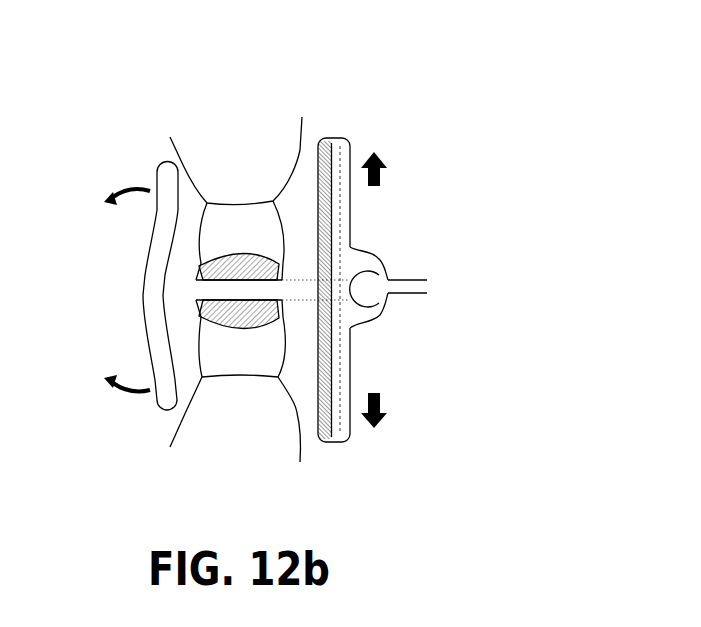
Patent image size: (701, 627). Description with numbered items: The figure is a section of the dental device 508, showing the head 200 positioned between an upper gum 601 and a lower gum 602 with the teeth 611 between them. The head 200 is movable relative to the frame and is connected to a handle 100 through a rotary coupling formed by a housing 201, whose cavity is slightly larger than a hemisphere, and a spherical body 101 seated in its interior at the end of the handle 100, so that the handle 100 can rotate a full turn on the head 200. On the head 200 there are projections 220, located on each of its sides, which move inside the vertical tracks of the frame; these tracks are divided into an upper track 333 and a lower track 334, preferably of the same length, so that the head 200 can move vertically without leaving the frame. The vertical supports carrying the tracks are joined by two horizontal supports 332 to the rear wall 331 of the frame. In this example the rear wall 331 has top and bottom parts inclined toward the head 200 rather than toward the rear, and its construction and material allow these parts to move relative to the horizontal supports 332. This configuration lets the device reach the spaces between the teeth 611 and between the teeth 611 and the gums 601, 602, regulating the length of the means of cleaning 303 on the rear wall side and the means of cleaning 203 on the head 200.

The dental device 508 is at (489, 106).
The means of cleaning 303 is at (163, 170).
The rear wall 331 is at (148, 257).
The horizontal supports 332 is at (165, 305).
The gum 601 is at (270, 137).
The gum 602 is at (230, 400).
The teeth 611 is at (245, 232).
The means of cleaning 203 is at (303, 395).
The head 200 is at (342, 135).
The upper vertical track 333 is at (351, 139).
The lower vertical track 334 is at (352, 428).
The projections 220 is at (358, 200).
The housing 201 is at (363, 255).
The spherical body 101 is at (367, 286).
The handle 100 is at (410, 289).